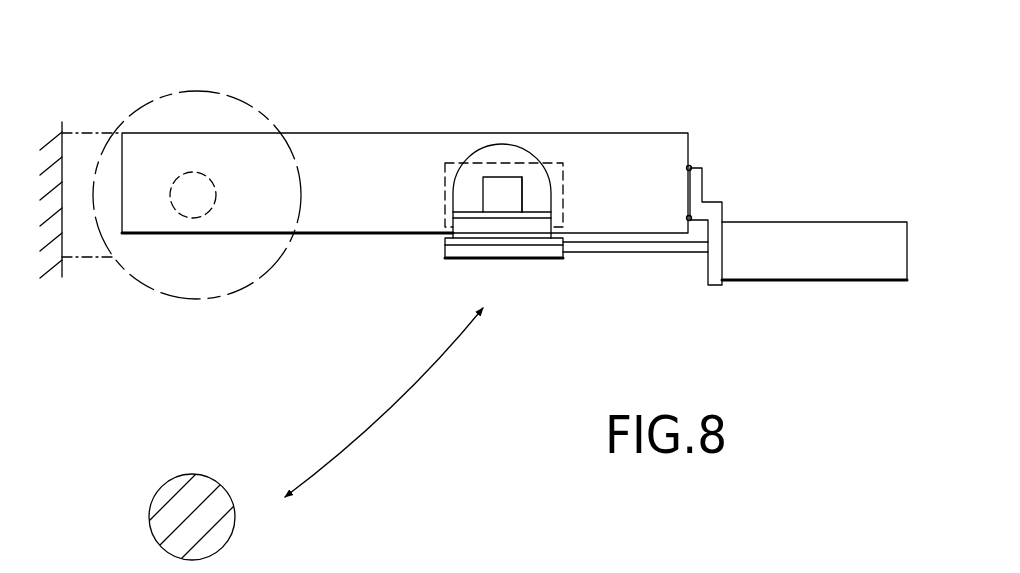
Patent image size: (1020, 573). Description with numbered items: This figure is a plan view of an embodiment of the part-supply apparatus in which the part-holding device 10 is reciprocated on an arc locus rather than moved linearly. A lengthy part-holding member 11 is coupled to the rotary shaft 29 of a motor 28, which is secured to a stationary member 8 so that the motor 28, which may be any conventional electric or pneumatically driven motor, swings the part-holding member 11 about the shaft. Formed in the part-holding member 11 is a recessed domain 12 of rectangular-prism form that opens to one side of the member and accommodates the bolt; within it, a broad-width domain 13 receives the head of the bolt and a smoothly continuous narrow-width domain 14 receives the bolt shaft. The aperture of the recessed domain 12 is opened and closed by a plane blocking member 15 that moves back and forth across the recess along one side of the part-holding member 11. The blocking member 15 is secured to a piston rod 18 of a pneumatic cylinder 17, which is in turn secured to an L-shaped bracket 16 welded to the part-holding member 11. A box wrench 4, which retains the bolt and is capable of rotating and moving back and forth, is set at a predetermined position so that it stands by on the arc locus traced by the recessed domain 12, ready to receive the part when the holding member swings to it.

The supply rod 4 is at (180, 475).
The stationary member 8 is at (62, 223).
The part-holding device 10 is at (337, 235).
The part-holding member 11 is at (370, 235).
The recessed domain 12 is at (458, 200).
The broad-width domain 13 is at (482, 152).
The narrow-width domain 14 is at (524, 190).
The blocking member 15 is at (490, 260).
The L-shaped bracket 16 is at (722, 213).
The pneumatic cylinder 17 is at (828, 222).
The piston rod 18 is at (613, 253).
The motor 28 is at (302, 175).
The rotary shaft 29 is at (206, 183).